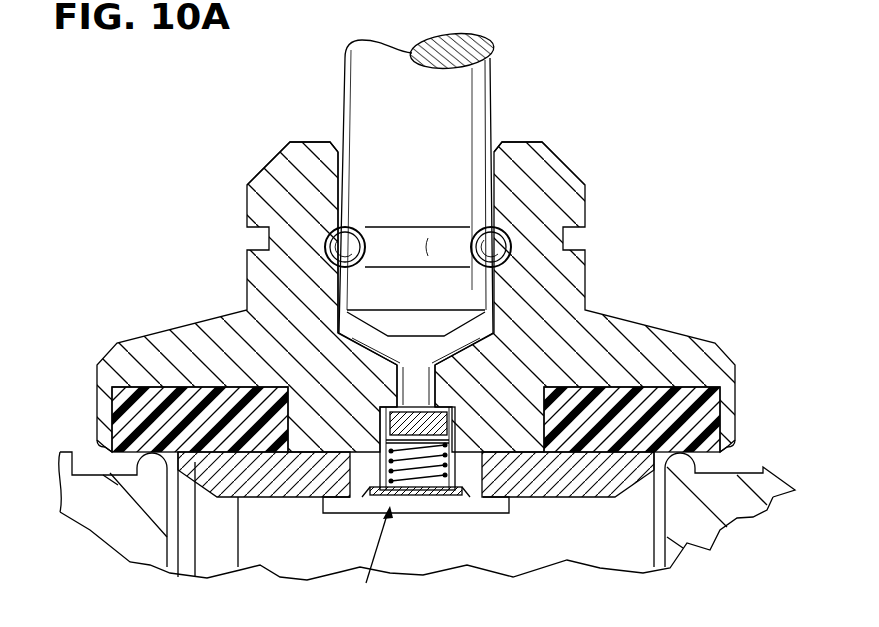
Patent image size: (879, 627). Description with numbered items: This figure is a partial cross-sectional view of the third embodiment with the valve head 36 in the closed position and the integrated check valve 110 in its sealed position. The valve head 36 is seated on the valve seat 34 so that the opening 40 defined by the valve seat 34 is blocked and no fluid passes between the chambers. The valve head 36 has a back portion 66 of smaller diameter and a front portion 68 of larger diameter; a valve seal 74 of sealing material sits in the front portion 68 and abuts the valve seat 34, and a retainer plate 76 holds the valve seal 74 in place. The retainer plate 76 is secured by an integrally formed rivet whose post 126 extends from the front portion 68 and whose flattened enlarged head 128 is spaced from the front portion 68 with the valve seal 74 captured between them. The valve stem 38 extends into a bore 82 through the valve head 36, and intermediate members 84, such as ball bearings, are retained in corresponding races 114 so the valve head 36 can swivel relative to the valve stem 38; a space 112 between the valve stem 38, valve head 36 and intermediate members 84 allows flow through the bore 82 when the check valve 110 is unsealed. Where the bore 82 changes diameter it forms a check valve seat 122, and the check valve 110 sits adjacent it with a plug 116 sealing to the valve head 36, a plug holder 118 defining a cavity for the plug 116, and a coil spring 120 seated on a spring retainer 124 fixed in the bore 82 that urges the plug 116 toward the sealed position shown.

The valve seat 34 is at (117, 485).
The valve head 36 is at (692, 353).
The valve stem 38 is at (478, 110).
The opening 40 is at (260, 565).
The back portion 66 is at (303, 140).
The front portion 68 is at (100, 443).
The valve seal 74 is at (167, 400).
The retainer plate 76 is at (590, 498).
The bore 82 is at (493, 170).
The intermediate members 84 is at (323, 248).
The check valve 110 is at (369, 559).
The space 112 is at (338, 150).
The corresponding races 114 is at (422, 230).
The plug 116 is at (428, 403).
The plug holder 118 is at (453, 425).
The spring 120 is at (453, 468).
The check valve seat 122 is at (387, 382).
The spring retainer 124 is at (372, 518).
The post 126 is at (470, 458).
The enlarged head 128 is at (327, 503).